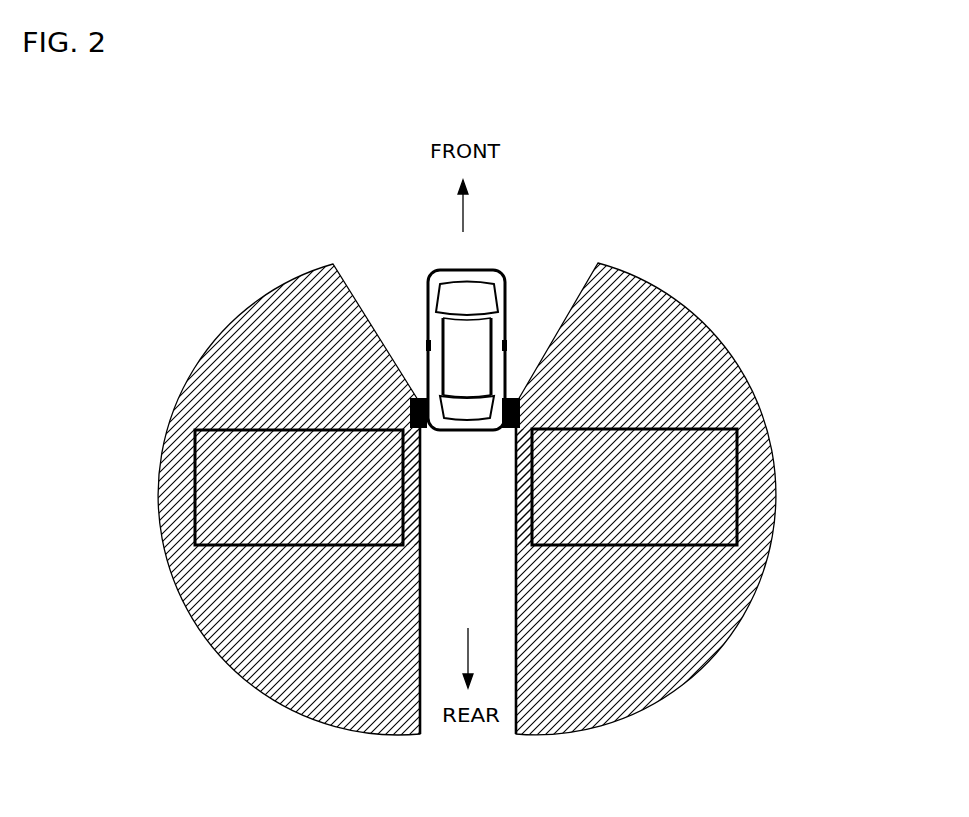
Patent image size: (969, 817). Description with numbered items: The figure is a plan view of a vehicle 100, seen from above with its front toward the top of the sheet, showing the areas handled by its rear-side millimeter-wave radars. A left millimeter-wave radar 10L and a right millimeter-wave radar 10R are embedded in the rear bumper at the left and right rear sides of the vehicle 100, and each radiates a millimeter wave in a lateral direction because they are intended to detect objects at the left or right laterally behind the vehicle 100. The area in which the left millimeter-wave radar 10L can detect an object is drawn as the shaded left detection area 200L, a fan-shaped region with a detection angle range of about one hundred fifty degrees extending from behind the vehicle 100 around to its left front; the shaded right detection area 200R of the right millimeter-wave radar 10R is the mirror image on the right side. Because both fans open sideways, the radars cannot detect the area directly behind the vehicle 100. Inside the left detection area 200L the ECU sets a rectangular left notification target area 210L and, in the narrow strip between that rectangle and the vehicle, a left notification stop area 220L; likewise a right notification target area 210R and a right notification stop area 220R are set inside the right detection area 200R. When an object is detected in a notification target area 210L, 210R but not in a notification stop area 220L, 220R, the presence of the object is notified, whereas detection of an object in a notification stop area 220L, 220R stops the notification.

The vehicle 100 is at (464, 432).
The left millimeter-wave radar 10L is at (415, 398).
The right millimeter-wave radar 10R is at (518, 398).
The left detection area 200L is at (240, 327).
The right detection area 200R is at (690, 328).
The left notification target area 210L is at (243, 492).
The right notification target area 210R is at (692, 490).
The left notification stop area 220L is at (408, 513).
The right notification stop area 220R is at (521, 516).